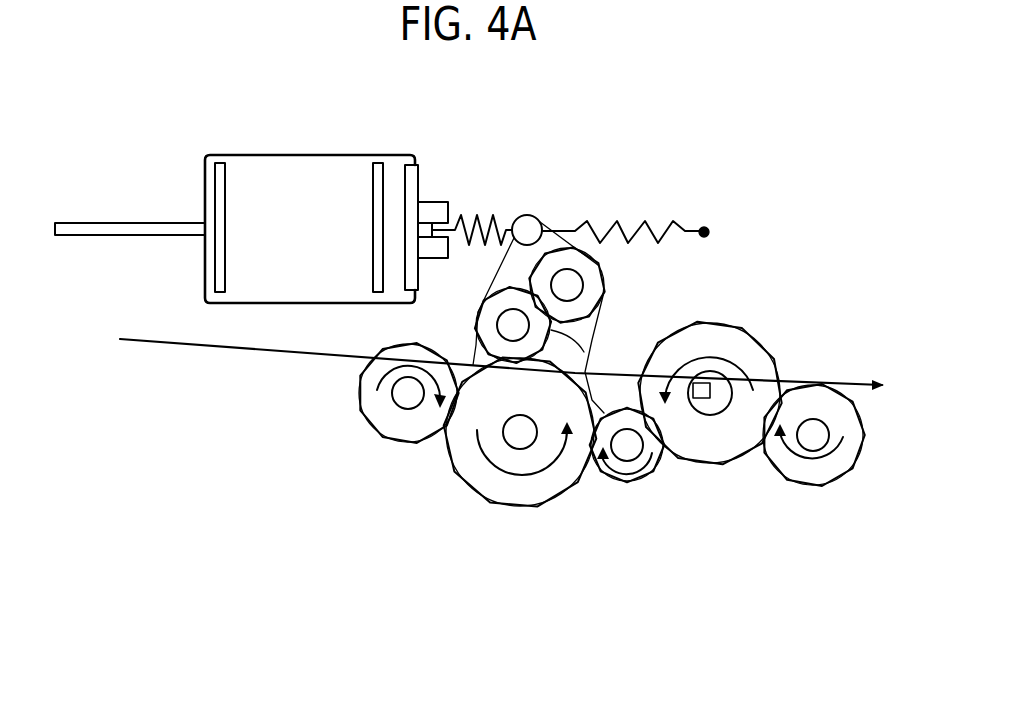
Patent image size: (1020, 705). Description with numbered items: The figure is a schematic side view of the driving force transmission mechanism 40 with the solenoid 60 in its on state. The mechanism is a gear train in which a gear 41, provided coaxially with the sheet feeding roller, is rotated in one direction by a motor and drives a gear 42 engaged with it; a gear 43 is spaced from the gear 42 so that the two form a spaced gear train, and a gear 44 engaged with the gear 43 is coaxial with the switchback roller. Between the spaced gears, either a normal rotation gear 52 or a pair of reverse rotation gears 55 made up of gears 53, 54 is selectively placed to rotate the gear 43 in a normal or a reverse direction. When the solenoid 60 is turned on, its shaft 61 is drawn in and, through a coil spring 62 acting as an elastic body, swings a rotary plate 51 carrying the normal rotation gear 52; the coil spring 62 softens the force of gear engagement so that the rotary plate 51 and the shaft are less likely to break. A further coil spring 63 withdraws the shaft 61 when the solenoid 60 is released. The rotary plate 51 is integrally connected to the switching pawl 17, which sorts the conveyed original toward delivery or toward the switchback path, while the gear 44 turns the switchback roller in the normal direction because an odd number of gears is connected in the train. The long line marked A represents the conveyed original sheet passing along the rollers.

The driving force transmission mechanism 40 is at (722, 154).
The solenoid 60 is at (310, 162).
The shaft 61 is at (433, 204).
The coil spring 62 is at (480, 224).
The coil spring 63 is at (617, 225).
The rotary plate 51 is at (500, 278).
The gear 53 is at (543, 332).
The gear 54 is at (603, 290).
The reverse rotation gears 55 is at (587, 305).
The gear 42 is at (735, 337).
The switching pawl 17 is at (703, 398).
The gear 41 is at (813, 397).
The gear 44 is at (400, 437).
The gear 43 is at (495, 500).
The normal rotation gear 52 is at (640, 478).
The sheet A is at (222, 340).